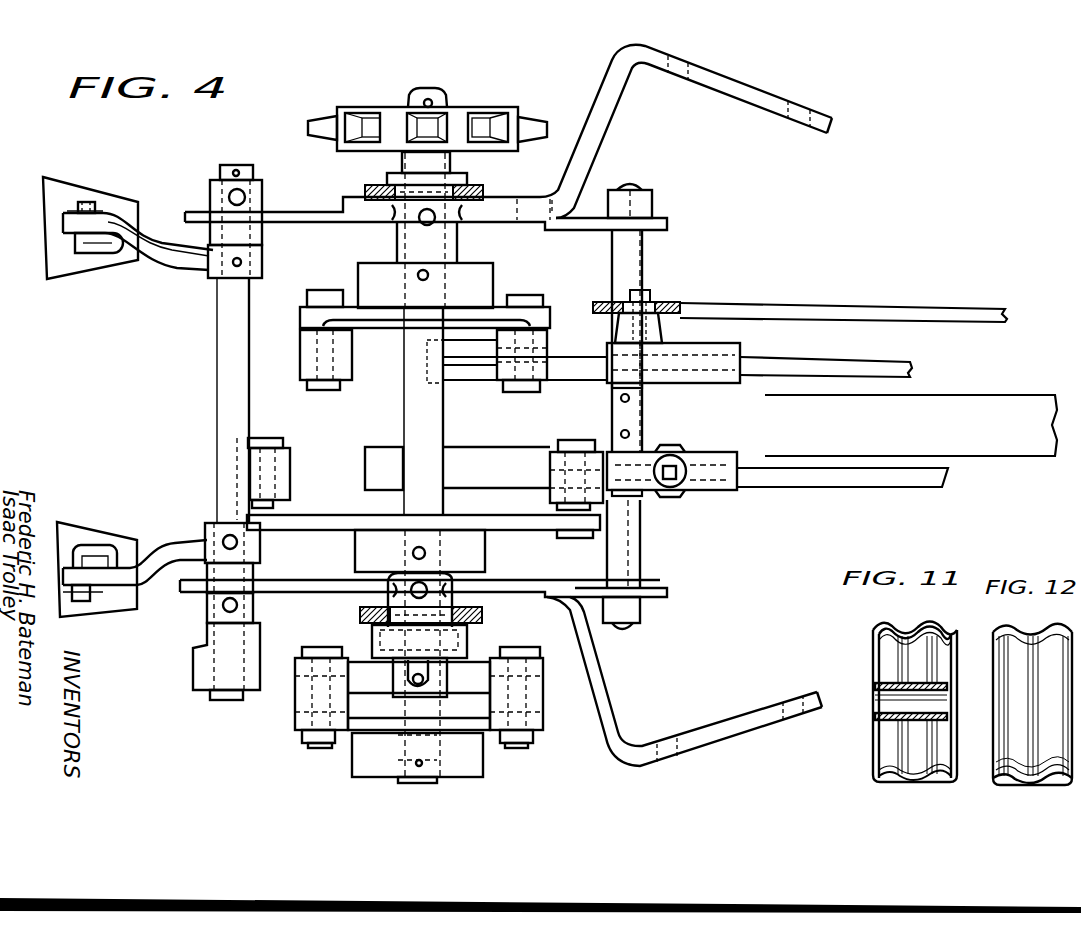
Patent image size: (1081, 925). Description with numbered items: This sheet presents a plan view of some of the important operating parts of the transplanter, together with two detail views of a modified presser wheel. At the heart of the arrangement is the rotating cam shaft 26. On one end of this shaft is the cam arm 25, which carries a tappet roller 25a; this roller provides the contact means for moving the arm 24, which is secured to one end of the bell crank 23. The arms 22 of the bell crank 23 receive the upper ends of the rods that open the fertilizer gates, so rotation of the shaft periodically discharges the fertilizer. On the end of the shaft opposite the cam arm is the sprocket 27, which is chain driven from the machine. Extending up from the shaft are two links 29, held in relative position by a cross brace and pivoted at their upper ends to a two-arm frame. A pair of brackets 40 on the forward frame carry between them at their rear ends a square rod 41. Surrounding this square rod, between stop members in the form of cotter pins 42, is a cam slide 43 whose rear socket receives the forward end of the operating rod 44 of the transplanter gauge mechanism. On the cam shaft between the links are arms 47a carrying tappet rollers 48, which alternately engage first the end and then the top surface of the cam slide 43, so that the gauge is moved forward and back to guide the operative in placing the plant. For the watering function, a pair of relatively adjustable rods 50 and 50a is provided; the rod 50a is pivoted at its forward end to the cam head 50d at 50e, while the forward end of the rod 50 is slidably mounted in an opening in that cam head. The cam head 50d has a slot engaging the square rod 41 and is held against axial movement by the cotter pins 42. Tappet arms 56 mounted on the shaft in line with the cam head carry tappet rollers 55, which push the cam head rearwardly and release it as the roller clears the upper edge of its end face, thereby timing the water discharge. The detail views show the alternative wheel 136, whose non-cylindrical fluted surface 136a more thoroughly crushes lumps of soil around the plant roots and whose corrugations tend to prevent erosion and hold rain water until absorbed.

In FIG. 4, the arms 22 is at (198, 258).
In FIG. 4, the bell crank 23 is at (217, 353).
In FIG. 4, the arm 24 is at (360, 673).
In FIG. 4, the cam arm 25 is at (365, 723).
In FIG. 4, the tappet roller 25a is at (567, 707).
In FIG. 4, the cam shaft 26 is at (418, 93).
In FIG. 4, the sprocket 27 is at (395, 114).
In FIG. 4, the links 29 is at (378, 183).
In FIG. 4, the brackets 40 is at (344, 218).
In FIG. 4, the square rod 41 is at (618, 552).
In FIG. 4, the cotter pins 42 is at (636, 441).
In FIG. 4, the cam slide 43 is at (460, 457).
In FIG. 4, the operating rod 44 is at (835, 473).
In FIG. 4, the arms 47a is at (510, 523).
In FIG. 4, the tappet rollers 48 is at (290, 470).
In FIG. 4, the rod 50 is at (883, 364).
In FIG. 4, the rod 50a is at (877, 313).
In FIG. 4, the cam head 50d is at (720, 352).
In FIG. 4, the pivot 50e is at (662, 298).
In FIG. 4, the tappet rollers 55 is at (300, 354).
In FIG. 4, the tappet arms 56 is at (387, 313).
In FIG. 11, the wheel 136 is at (873, 647).
In FIG. 12, the wheel 136 is at (1032, 708).
In FIG. 11, the fluted surface 136a is at (897, 621).
In FIG. 12, the fluted surface 136a is at (1002, 621).